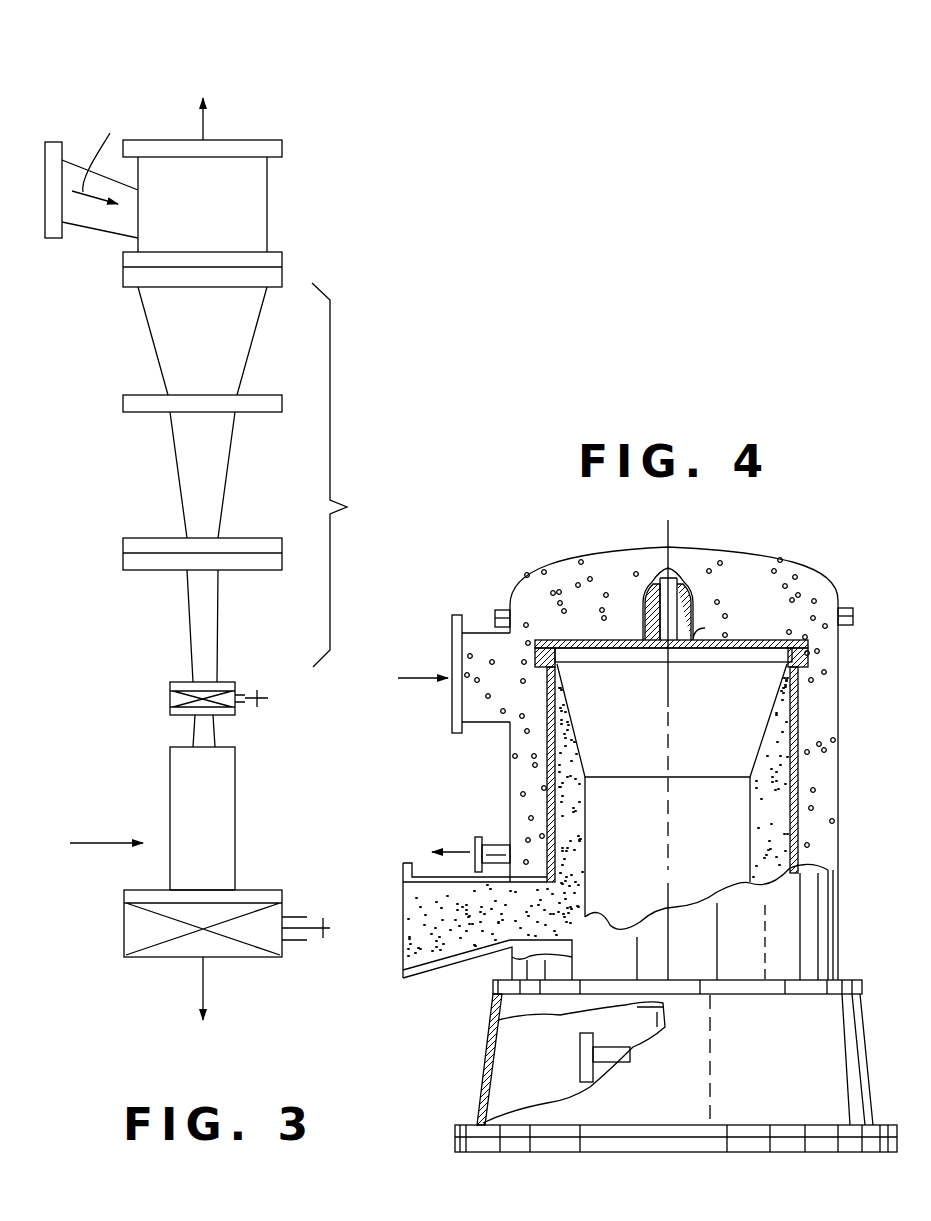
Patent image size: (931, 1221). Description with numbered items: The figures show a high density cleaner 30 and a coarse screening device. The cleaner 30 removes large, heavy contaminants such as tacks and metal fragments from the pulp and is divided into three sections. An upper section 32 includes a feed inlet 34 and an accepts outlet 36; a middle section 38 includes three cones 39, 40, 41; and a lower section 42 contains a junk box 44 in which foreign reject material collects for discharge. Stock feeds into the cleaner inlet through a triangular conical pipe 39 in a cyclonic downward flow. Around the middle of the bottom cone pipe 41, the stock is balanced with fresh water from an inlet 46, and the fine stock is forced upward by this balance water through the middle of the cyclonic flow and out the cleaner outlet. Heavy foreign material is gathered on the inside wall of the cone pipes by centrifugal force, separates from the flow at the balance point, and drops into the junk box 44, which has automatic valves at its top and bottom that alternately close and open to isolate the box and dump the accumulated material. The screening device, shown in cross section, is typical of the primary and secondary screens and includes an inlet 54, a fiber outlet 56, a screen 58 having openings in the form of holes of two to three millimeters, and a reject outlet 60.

In FIG. 3, the high density cleaner 30 is at (78, 98).
In FIG. 3, the upper section 32 is at (267, 192).
In FIG. 3, the feed inlet 34 is at (113, 228).
In FIG. 3, the accepts outlet 36 is at (262, 140).
In FIG. 3, the middle section 38 is at (350, 475).
In FIG. 3, the triangular conical pipe 39 is at (153, 350).
In FIG. 3, the cone 40 is at (183, 487).
In FIG. 3, the bottom cone pipe 41 is at (190, 648).
In FIG. 3, the lower section 42 is at (89, 843).
In FIG. 3, the junk box 44 is at (225, 828).
In FIG. 3, the inlet 46 is at (274, 698).
In FIG. 4, the inlet 54 is at (475, 612).
In FIG. 4, the fiber outlet 56 is at (403, 985).
In FIG. 4, the screen 58 is at (797, 720).
In FIG. 4, the reject outlet 60 is at (490, 843).